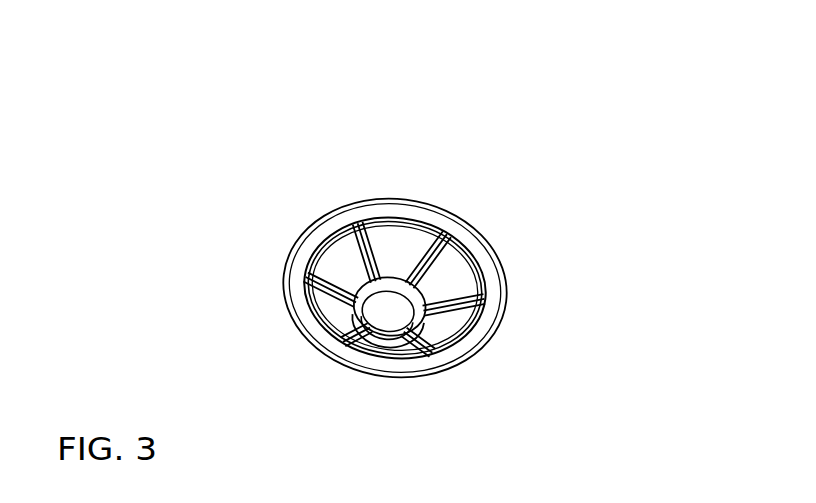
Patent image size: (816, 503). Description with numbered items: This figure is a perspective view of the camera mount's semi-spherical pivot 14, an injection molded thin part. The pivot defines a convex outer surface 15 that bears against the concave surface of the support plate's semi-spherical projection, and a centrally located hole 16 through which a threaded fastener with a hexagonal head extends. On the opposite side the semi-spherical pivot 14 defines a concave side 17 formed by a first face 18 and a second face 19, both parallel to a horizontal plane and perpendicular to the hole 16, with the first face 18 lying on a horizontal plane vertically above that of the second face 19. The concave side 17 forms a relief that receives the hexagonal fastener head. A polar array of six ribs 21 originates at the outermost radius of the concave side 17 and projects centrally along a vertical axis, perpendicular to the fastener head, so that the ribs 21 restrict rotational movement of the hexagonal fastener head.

The semi-spherical pivot 14 is at (364, 177).
The convex outer surface 15 is at (375, 376).
The centrally located hole 16 is at (389, 316).
The concave side 17 is at (386, 227).
The first face 18 is at (384, 231).
The second face 19 is at (388, 275).
The ribs 21 is at (335, 318).